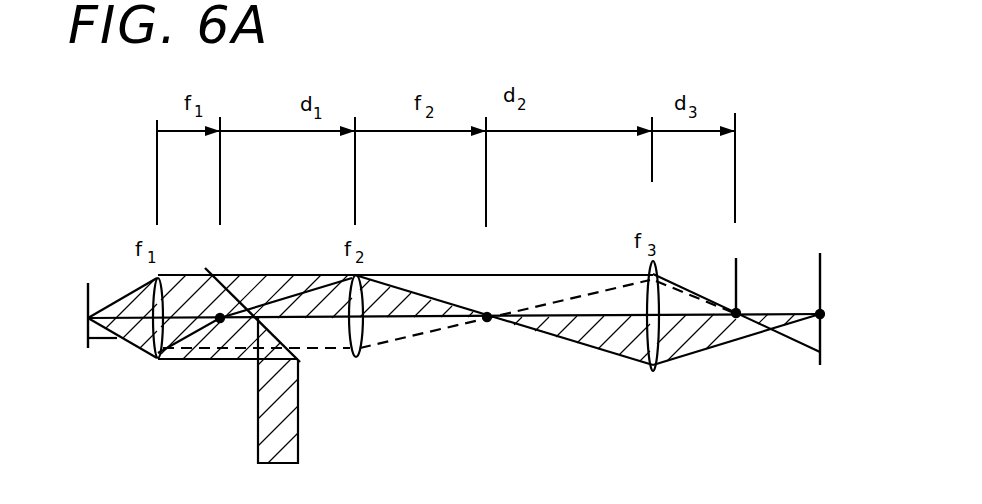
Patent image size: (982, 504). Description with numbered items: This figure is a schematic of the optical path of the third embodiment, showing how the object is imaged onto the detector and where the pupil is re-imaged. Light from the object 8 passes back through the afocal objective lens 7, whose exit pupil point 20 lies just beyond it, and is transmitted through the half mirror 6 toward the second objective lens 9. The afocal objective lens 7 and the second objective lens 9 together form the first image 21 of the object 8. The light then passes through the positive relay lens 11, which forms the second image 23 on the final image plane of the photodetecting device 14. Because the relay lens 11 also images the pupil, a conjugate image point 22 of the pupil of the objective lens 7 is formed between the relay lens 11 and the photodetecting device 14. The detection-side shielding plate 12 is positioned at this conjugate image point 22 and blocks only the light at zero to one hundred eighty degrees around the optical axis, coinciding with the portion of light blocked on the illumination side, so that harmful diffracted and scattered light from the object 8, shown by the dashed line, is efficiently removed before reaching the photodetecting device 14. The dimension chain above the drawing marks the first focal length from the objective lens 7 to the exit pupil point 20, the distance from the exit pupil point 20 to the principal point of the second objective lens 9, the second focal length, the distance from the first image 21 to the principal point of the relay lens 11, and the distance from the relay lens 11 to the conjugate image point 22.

The half mirror 6 is at (300, 360).
The objective lens 7 is at (160, 356).
The object 8 is at (88, 350).
The second objective lens 9 is at (357, 356).
The relay lens 11 is at (660, 345).
The detection-side shielding plate 12 is at (738, 270).
The photodetecting device 14 is at (822, 343).
The exit pupil point 20 is at (220, 360).
The first image 21 is at (487, 320).
The conjugate image point 22 is at (734, 318).
The second image 23 is at (844, 286).